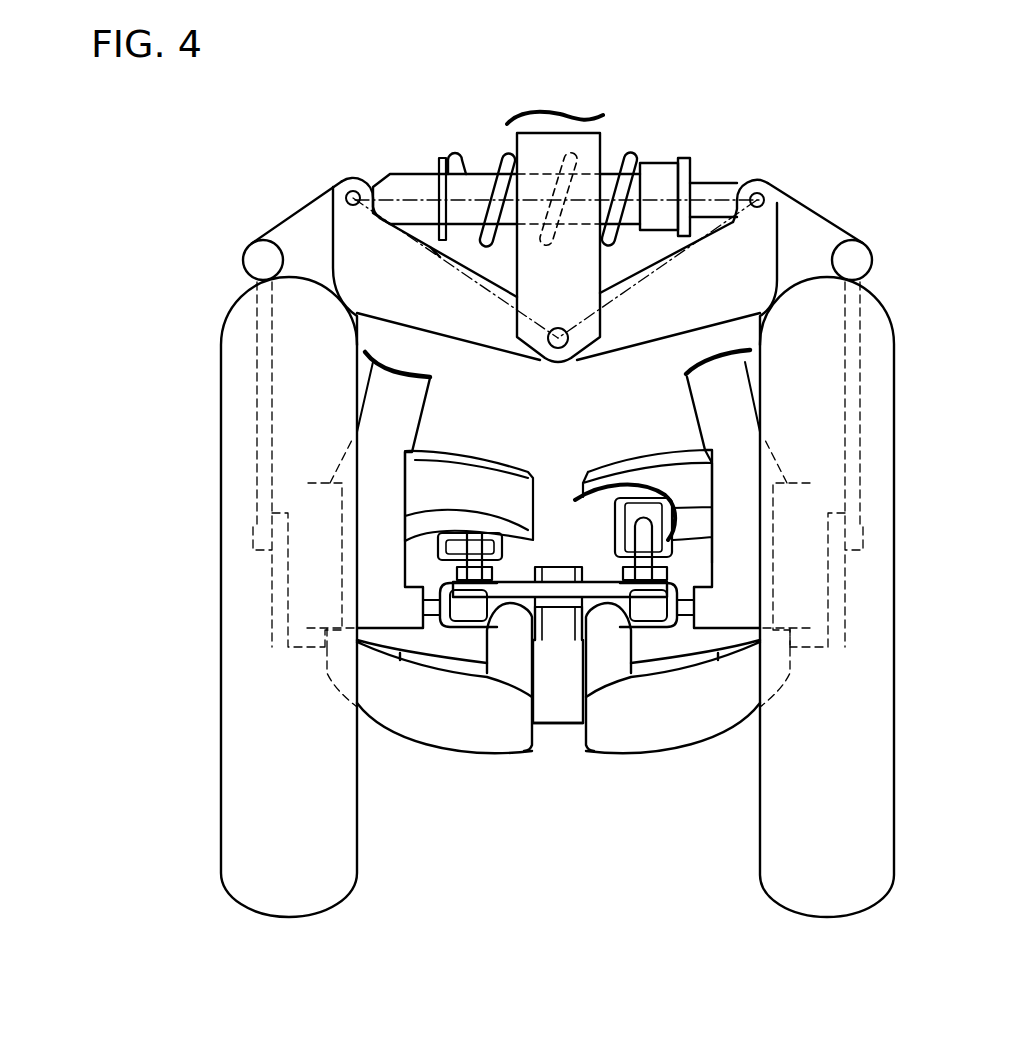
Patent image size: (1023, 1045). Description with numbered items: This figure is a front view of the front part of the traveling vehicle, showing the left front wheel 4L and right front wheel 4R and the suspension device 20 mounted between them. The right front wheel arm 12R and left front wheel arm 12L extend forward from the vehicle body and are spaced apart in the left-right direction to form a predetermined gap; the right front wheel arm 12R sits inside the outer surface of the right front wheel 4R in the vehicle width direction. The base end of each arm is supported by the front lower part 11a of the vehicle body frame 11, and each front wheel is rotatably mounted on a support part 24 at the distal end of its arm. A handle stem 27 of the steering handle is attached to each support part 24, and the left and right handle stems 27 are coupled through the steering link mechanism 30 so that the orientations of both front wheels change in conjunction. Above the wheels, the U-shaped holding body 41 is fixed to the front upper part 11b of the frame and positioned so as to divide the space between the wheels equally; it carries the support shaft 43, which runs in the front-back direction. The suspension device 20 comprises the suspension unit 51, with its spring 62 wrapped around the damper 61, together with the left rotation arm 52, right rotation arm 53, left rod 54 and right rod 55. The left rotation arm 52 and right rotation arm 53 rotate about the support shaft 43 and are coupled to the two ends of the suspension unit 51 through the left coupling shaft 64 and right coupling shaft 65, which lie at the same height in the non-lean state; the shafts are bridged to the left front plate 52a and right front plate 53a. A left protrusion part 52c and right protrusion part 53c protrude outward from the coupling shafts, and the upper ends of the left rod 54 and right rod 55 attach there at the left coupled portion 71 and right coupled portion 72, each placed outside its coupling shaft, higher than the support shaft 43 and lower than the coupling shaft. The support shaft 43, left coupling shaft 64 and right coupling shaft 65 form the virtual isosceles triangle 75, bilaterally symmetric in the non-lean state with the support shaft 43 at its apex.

The suspension device 20 is at (172, 173).
The right front wheel 4R is at (230, 777).
The left front wheel 4L is at (893, 777).
The vehicle body frame 11 is at (554, 738).
The front lower part 11a is at (568, 727).
The front upper part 11b is at (575, 123).
The right front wheel arm 12R is at (441, 757).
The left front wheel arm 12L is at (672, 763).
The support part 24 is at (310, 556).
The handle stem 27 is at (380, 527).
The steering link mechanism 30 is at (505, 647).
The holding body 41 is at (590, 143).
The support shaft 43 is at (535, 350).
The suspension unit 51 is at (679, 152).
The left rotation arm 52 is at (784, 251).
The left front plate 52a is at (663, 330).
The left protrusion part 52c is at (840, 240).
The right rotation arm 53 is at (335, 251).
The right front plate 53a is at (450, 335).
The right protrusion part 53c is at (293, 202).
The left rod 54 is at (867, 388).
The right rod 55 is at (257, 390).
The damper 61 is at (440, 190).
The spring 62 is at (490, 190).
The left coupling shaft 64 is at (780, 188).
The right coupling shaft 65 is at (348, 194).
The left coupled portion 71 is at (885, 259).
The right coupled portion 72 is at (231, 258).
The triangle 75 is at (718, 200).